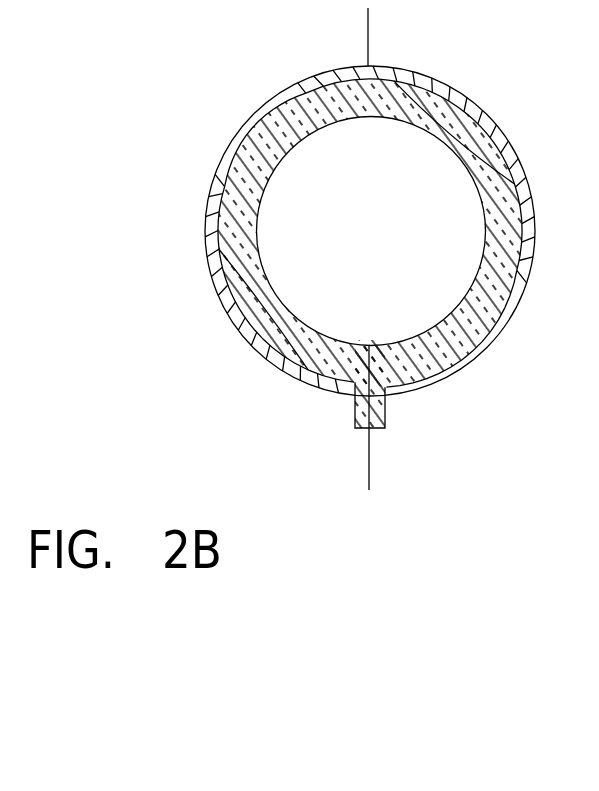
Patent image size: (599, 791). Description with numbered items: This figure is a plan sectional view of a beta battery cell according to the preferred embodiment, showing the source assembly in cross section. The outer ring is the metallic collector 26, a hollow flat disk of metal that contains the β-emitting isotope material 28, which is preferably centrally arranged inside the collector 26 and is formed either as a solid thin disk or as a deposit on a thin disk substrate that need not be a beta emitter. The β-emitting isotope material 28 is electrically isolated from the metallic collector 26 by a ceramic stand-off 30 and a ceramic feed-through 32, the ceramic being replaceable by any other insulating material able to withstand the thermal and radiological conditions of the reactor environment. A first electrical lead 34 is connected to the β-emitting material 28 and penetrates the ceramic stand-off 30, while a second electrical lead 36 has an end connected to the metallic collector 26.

The metallic collector 26 is at (288, 86).
The β-emitting isotope material 28 is at (241, 334).
The ceramic stand-off 30 is at (268, 366).
The ceramic feed-through 32 is at (385, 418).
The first electrical lead 34 is at (367, 453).
The second electrical lead 36 is at (368, 40).